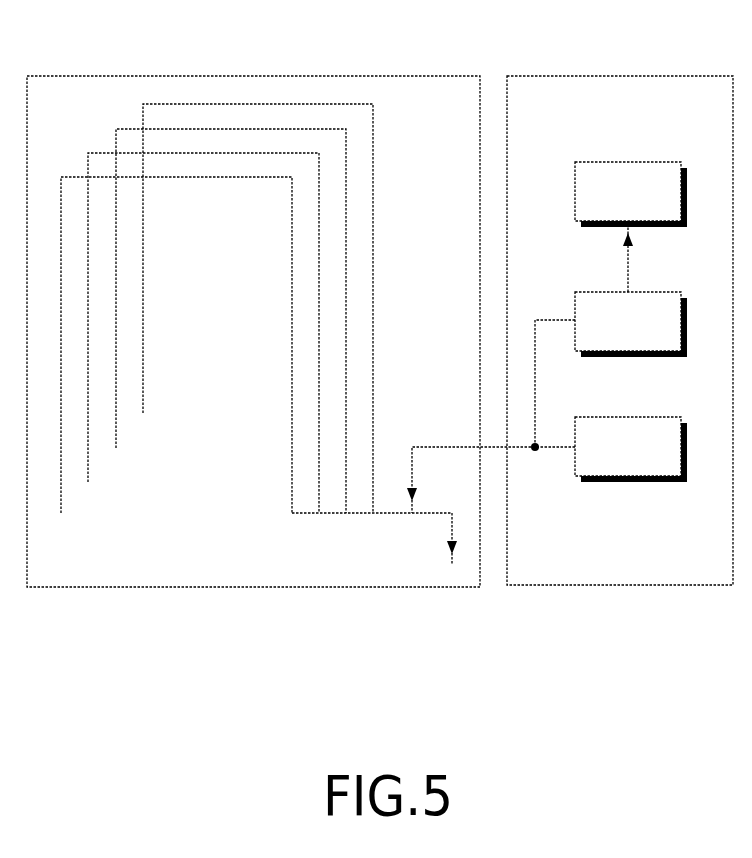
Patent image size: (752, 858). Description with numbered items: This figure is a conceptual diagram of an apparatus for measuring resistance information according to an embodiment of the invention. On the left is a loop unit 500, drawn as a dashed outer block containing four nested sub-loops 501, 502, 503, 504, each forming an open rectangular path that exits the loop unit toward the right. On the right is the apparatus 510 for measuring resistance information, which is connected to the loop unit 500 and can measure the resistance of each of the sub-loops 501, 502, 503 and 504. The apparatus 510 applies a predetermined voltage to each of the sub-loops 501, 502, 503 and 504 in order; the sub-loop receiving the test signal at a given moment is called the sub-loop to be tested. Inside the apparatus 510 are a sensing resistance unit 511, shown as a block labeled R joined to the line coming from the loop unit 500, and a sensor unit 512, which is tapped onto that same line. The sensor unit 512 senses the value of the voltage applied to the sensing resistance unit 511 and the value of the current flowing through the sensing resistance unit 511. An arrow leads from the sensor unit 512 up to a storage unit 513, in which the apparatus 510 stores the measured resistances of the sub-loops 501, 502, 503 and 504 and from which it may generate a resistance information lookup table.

The loop unit 500 is at (251, 76).
The sub-loop 501 is at (61, 500).
The sub-loop 502 is at (88, 468).
The sub-loop 503 is at (116, 436).
The sub-loop 504 is at (143, 402).
The apparatus for measuring resistance information 510 is at (625, 76).
The sensing resistance unit 511 is at (626, 417).
The sensor unit 512 is at (656, 292).
The storage unit 513 is at (626, 162).